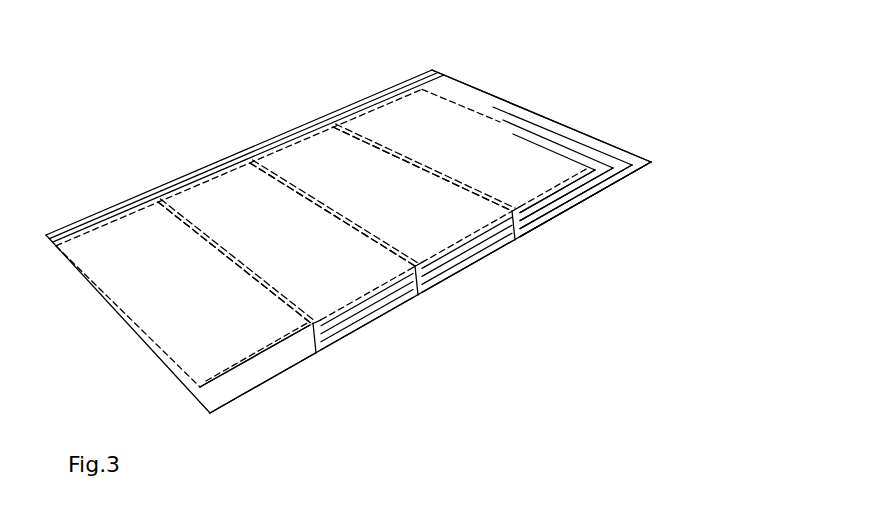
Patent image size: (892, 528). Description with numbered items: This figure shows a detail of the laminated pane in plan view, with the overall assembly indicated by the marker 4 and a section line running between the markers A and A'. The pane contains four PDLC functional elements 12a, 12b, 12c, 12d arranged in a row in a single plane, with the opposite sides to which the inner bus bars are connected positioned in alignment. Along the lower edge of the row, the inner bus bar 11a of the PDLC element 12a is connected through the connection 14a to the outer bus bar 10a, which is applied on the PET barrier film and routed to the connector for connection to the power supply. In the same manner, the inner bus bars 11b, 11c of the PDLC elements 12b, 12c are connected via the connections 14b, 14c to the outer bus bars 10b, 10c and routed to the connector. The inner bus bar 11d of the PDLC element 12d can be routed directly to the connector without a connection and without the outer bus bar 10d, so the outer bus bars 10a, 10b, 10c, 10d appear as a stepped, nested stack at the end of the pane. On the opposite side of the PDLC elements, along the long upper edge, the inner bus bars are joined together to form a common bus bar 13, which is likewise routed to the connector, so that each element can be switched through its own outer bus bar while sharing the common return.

The solar cell module 4 is at (348, 234).
The common bus bar 13 is at (108, 208).
The outer bus bar 10a is at (646, 160).
The outer bus bar 10b is at (601, 150).
The outer bus bar 10c is at (566, 136).
The outer bus bar 10d is at (534, 116).
The inner bus bar 11a is at (250, 360).
The inner bus bar 11b is at (367, 294).
The inner bus bar 11c is at (468, 240).
The inner bus bar 11d is at (598, 199).
The PDLC functional element 12a is at (200, 298).
The PDLC functional element 12b is at (307, 246).
The PDLC functional element 12c is at (402, 200).
The PDLC functional element 12d is at (485, 160).
The connection 14a is at (318, 352).
The connection 14b is at (423, 292).
The connection 14c is at (514, 218).
The section line start A is at (297, 103).
The section line end A' is at (551, 243).